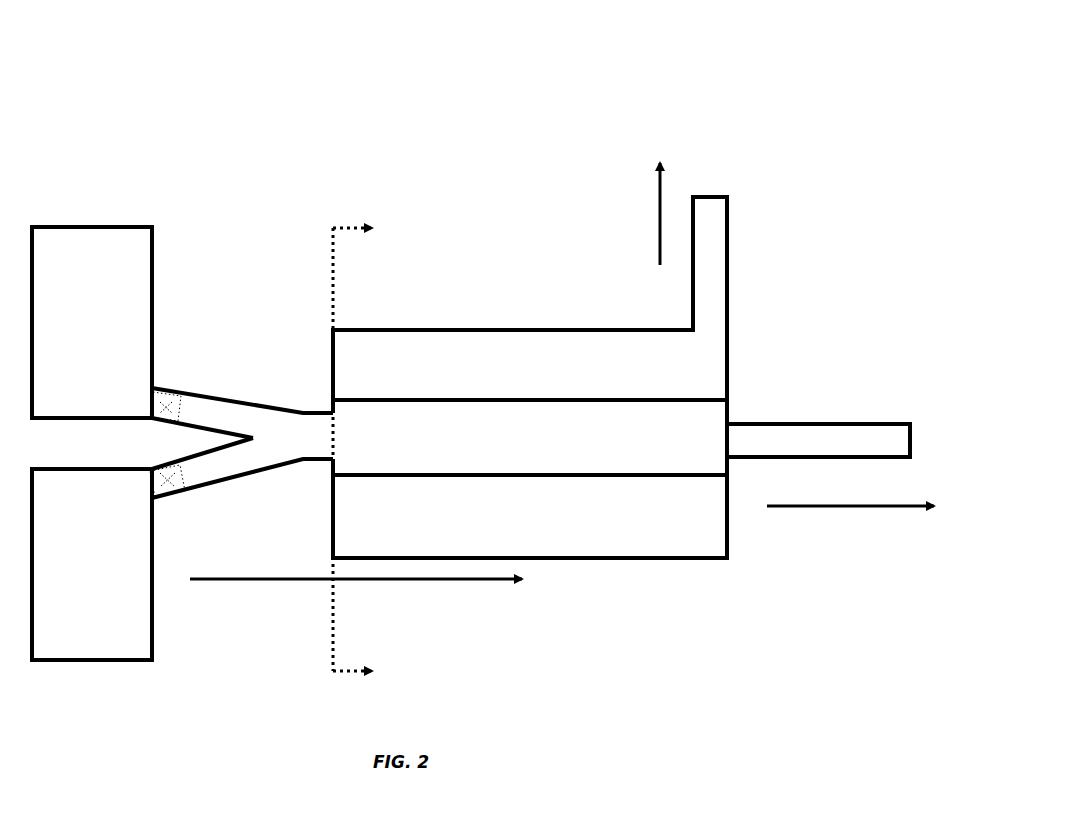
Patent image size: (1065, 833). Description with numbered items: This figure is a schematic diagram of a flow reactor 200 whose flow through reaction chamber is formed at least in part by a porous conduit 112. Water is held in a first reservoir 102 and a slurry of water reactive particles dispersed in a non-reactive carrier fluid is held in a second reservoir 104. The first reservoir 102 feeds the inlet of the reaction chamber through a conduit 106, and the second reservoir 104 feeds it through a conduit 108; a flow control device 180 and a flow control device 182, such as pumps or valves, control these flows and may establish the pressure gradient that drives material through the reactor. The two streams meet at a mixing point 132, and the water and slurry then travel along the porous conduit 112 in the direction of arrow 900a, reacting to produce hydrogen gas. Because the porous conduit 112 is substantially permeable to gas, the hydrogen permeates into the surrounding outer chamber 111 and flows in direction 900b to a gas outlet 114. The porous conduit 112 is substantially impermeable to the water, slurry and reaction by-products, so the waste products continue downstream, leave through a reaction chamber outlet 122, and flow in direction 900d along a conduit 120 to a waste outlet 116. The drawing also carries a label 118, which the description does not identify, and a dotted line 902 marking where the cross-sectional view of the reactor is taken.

The flow reactor 200 is at (70, 112).
The first reservoir 102 is at (108, 288).
The second reservoir 104 is at (108, 532).
The conduit 106 is at (234, 390).
The conduit 108 is at (228, 483).
The mixing point 132 is at (262, 438).
The flow control device 180 is at (153, 390).
The flow control device 182 is at (156, 498).
The outer chamber 111 is at (544, 365).
The porous conduit 112 is at (544, 457).
The gas outlet 114 is at (710, 197).
The chamber wall 118 is at (728, 272).
The conduit 120 is at (815, 458).
The waste outlet 116 is at (912, 440).
The reaction chamber outlet 122 is at (722, 441).
The line 902 is at (345, 226).
The arrow 900a is at (225, 581).
The direction 900b is at (658, 205).
The direction 900d is at (815, 508).